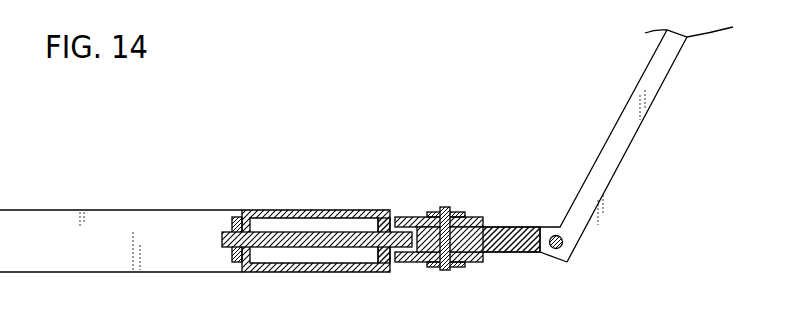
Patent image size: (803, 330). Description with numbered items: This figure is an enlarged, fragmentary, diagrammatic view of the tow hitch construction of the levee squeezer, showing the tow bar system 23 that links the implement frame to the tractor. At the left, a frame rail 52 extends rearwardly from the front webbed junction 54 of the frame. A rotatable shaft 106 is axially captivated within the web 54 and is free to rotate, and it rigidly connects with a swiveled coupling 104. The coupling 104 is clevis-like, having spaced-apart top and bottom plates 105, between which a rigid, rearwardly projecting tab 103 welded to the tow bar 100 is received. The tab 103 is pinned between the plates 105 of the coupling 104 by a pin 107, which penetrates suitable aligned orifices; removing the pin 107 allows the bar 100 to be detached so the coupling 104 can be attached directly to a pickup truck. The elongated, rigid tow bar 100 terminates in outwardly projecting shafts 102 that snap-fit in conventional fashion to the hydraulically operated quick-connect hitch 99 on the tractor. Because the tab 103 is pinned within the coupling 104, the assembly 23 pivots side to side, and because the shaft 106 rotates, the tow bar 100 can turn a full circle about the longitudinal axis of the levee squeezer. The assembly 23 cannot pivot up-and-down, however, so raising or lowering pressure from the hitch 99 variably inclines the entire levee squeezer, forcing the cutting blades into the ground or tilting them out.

The tow bar system 23 is at (253, 138).
The frame rail 52 is at (207, 213).
The webbed junction 54 is at (333, 214).
The quick-connect hitch 99 is at (622, 142).
The tow bar 100 is at (532, 227).
The outwardly projecting shaft 102 is at (552, 236).
The tab 103 is at (497, 227).
The swiveled coupling 104 is at (418, 262).
The top and bottom plates 105 is at (472, 262).
The rotatable shaft 106 is at (371, 250).
The pin 107 is at (445, 207).